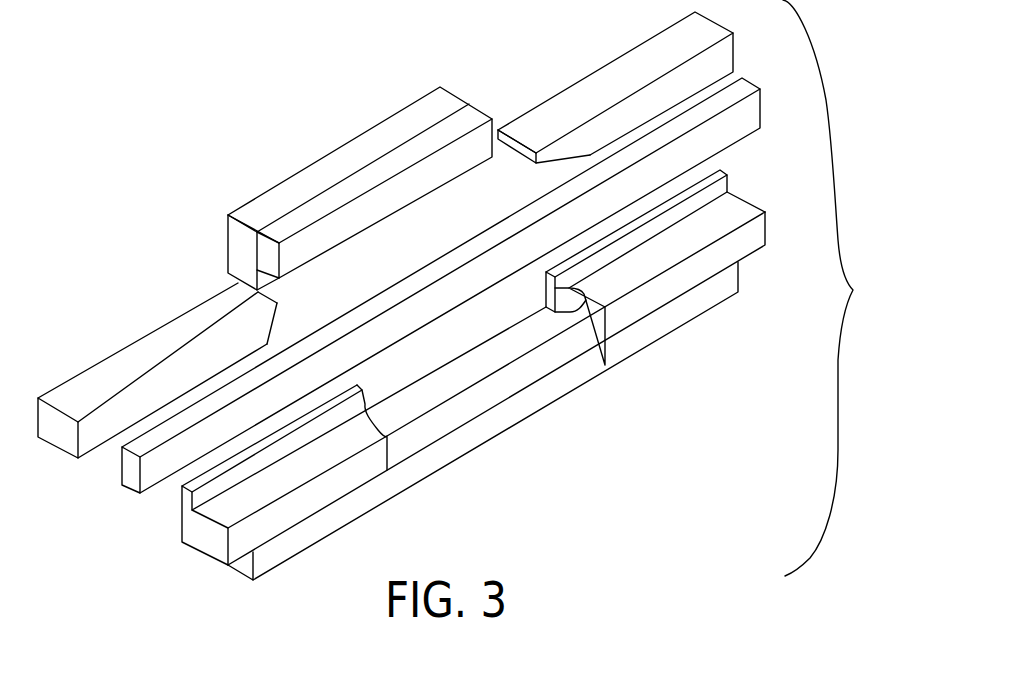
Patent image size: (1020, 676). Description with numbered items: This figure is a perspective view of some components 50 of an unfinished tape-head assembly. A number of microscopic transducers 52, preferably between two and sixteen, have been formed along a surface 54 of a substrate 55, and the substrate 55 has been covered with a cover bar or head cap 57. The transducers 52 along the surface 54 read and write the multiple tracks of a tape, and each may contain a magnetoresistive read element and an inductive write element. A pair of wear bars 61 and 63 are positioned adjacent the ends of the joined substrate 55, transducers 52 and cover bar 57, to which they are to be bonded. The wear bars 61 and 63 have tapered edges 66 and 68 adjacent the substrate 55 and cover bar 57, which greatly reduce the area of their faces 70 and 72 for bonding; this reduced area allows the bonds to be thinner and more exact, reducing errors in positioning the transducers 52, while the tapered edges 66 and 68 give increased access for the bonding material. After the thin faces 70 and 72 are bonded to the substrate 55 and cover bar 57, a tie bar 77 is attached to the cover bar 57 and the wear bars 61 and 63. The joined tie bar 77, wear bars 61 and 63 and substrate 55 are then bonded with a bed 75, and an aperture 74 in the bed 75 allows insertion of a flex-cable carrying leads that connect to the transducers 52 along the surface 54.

The components 50 is at (840, 288).
The transducers 52 is at (378, 158).
The surface 54 is at (263, 283).
The substrate 55 is at (236, 258).
The cover bar 57 is at (388, 205).
The wear bar 61 is at (162, 347).
The wear bar 63 is at (617, 75).
The tapered edge 66 is at (272, 343).
The tapered edge 68 is at (565, 162).
The face 70 is at (270, 306).
The face 72 is at (516, 145).
The aperture 74 is at (485, 400).
The bed 75 is at (640, 317).
The tie bar 77 is at (127, 474).